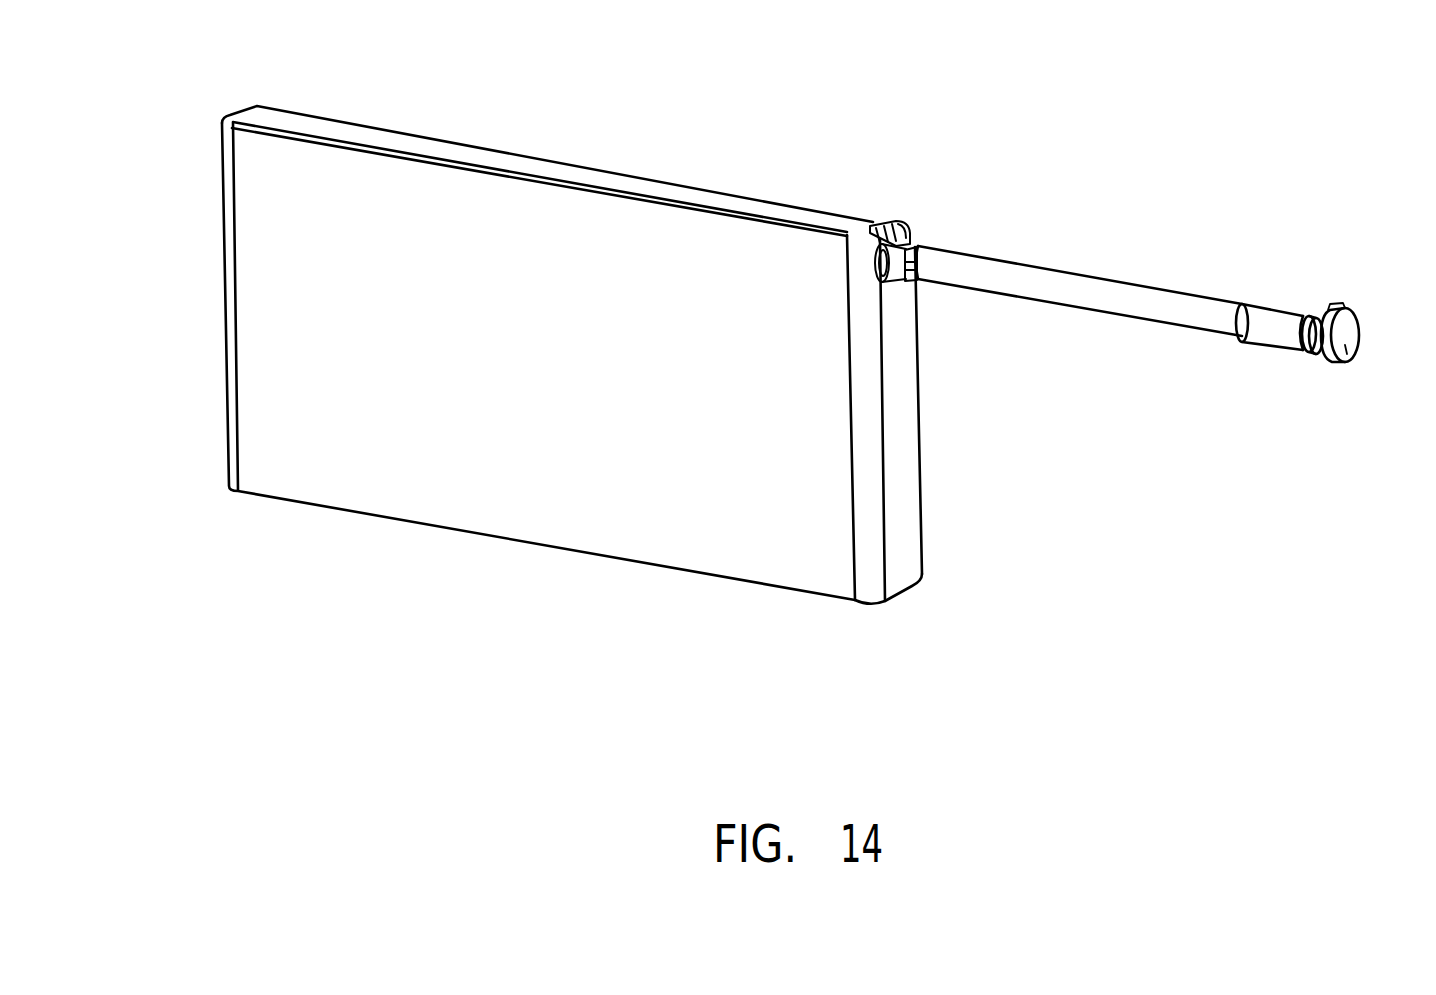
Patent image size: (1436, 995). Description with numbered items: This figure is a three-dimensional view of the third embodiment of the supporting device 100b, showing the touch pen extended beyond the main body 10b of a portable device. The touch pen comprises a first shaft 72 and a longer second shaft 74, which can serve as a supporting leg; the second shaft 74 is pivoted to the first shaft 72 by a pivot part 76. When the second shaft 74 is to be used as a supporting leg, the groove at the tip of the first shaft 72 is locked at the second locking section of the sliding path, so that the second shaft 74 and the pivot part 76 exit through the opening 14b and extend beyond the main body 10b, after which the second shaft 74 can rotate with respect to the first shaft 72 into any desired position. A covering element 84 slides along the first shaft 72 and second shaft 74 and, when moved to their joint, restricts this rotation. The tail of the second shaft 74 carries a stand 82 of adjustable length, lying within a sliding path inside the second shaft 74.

The display device 100b is at (754, 324).
The main body 10b is at (602, 177).
The first shaft 72 is at (902, 222).
The opening 14b is at (916, 235).
The pivot part 76 is at (923, 298).
The second shaft 74 is at (1080, 283).
The covering element 84 is at (1283, 318).
The stand 82 is at (1346, 345).